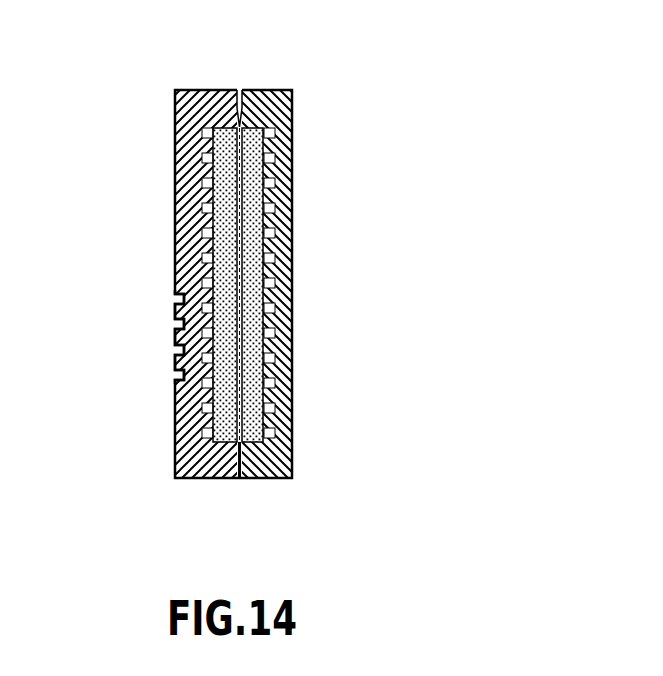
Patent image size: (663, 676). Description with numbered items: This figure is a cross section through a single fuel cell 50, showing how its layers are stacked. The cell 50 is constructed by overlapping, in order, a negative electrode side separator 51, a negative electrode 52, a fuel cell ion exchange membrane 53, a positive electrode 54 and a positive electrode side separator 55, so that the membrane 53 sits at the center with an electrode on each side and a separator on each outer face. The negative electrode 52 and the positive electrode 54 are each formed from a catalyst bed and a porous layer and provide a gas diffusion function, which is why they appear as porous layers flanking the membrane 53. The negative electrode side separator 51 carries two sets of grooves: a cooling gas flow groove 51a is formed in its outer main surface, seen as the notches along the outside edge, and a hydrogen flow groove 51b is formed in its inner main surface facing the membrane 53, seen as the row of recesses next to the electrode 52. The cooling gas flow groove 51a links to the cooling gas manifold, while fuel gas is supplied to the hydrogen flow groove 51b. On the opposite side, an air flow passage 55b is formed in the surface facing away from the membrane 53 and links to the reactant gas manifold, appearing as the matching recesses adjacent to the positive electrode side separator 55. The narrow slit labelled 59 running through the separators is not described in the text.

The cell 50 is at (302, 171).
The negative electrode side separator 51 is at (186, 445).
The cooling gas flow groove 51a is at (181, 298).
The hydrogen flow groove 51b is at (184, 229).
The negative electrode 52 is at (224, 478).
The fuel cell ion exchange membrane 53 is at (241, 318).
The positive electrode 54 is at (293, 478).
The positive electrode side separator 55 is at (291, 441).
The air flow passage 55b is at (277, 205).
The slit 59 is at (247, 91).